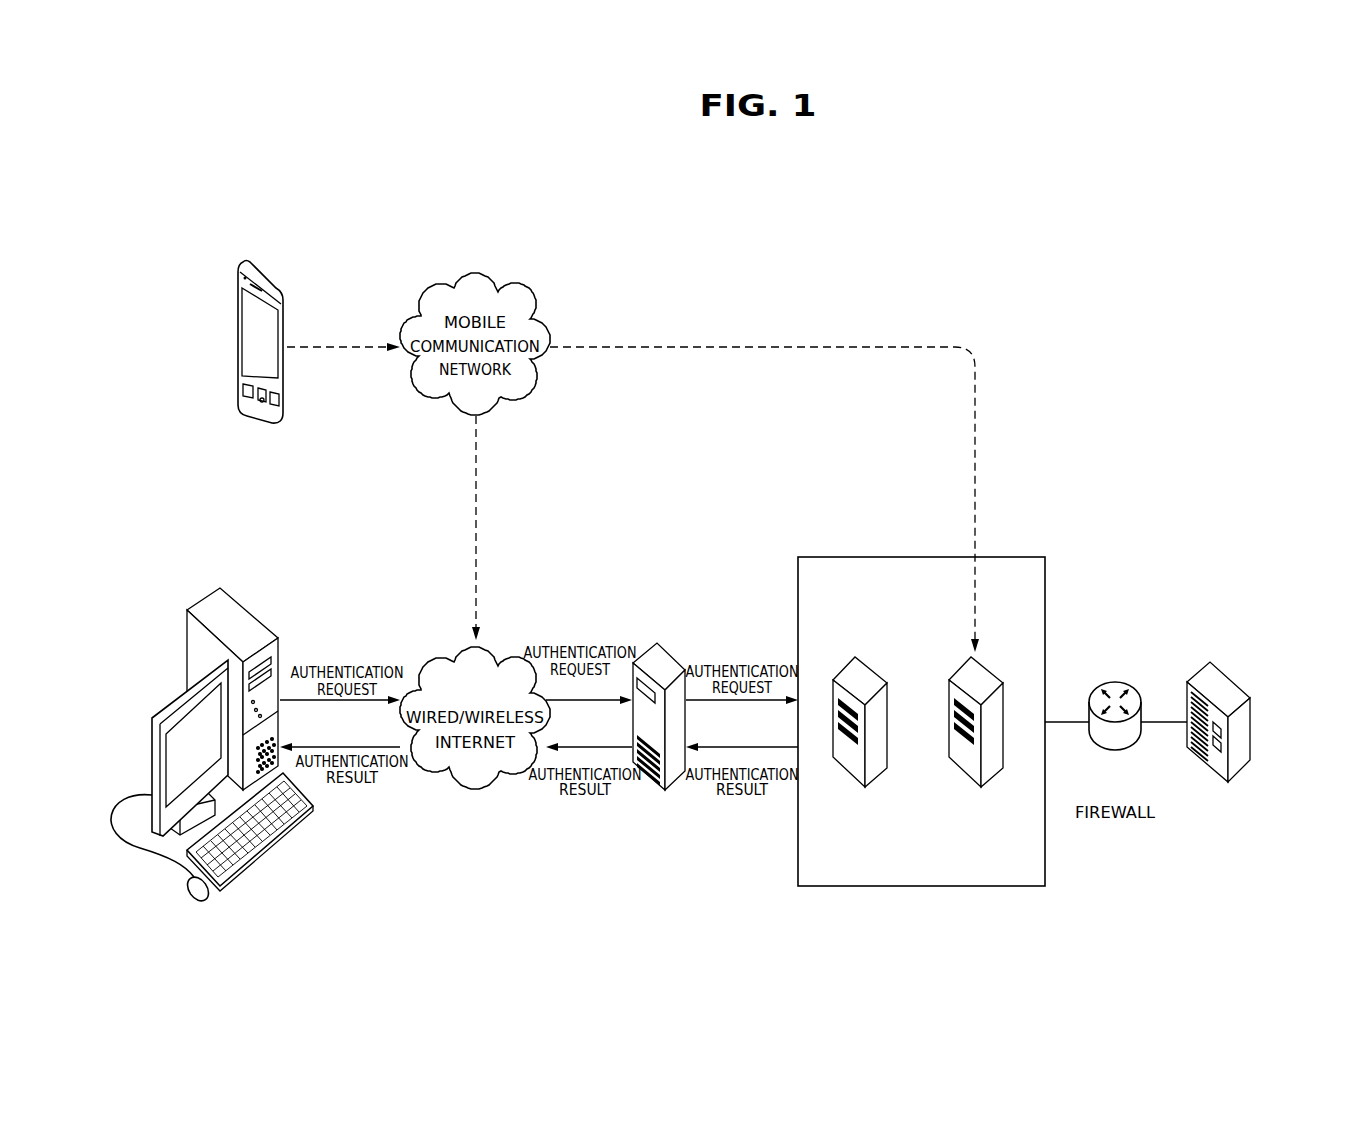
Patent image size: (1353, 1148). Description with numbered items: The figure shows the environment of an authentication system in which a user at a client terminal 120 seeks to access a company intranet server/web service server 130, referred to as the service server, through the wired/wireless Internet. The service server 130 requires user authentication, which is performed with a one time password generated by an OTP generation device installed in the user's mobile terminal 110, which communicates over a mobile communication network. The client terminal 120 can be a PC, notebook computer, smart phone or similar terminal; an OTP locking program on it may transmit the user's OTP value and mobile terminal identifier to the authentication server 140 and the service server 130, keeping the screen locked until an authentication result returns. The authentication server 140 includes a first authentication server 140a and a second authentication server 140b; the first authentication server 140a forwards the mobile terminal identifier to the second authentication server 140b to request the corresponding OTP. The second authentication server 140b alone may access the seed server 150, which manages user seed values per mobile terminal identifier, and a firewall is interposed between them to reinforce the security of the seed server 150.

The mobile terminal 110 is at (264, 271).
The client terminal 120 is at (247, 607).
The company intranet server/web service server 130 is at (653, 642).
The authentication server 140 is at (886, 556).
The first authentication server 140a is at (875, 677).
The second authentication server 140b is at (987, 677).
The seed server 150 is at (1218, 672).